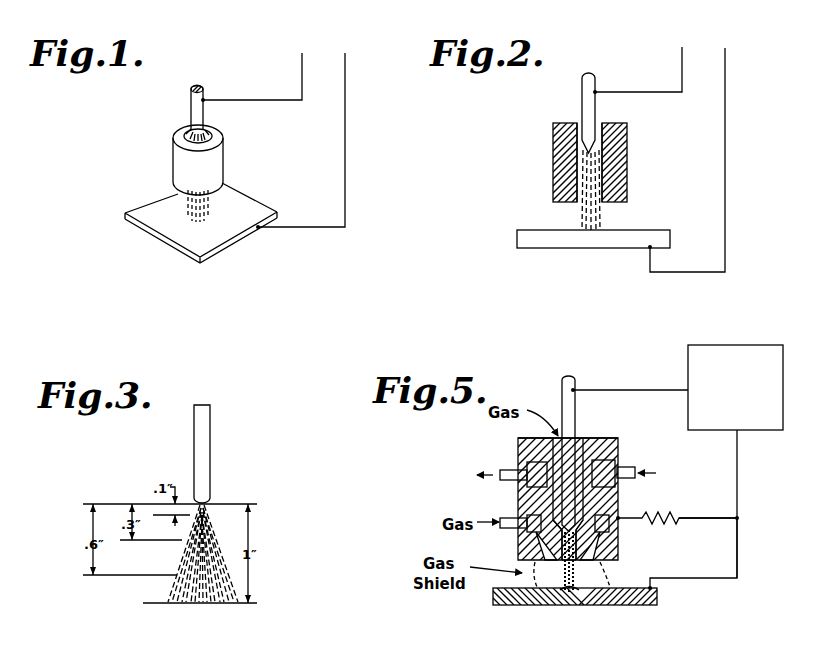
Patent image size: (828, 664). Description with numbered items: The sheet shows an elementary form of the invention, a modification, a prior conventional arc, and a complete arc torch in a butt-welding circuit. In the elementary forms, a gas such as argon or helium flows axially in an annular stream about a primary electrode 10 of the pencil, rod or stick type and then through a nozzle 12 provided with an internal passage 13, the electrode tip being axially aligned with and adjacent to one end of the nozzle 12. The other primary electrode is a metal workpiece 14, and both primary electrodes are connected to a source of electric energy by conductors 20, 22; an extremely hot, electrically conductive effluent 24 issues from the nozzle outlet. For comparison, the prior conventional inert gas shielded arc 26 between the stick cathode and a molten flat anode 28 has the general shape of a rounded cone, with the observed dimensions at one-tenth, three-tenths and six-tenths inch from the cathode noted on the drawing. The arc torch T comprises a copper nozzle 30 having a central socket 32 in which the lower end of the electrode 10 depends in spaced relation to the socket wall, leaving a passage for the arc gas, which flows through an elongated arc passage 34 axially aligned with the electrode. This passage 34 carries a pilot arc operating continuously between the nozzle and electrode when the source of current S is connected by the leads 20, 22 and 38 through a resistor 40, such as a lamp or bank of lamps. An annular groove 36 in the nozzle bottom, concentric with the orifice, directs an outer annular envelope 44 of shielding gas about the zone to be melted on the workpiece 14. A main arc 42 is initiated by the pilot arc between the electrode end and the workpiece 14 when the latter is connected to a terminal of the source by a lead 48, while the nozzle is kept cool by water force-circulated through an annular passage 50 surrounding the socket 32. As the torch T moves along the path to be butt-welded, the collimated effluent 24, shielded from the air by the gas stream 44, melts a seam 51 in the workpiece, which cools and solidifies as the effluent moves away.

In FIG. 1, the primary electrode 10 is at (191, 100).
In FIG. 2, the primary electrode 10 is at (582, 81).
In FIG. 3, the primary electrode 10 is at (202, 432).
In FIG. 5, the primary electrode 10 is at (565, 382).
In FIG. 1, the nozzle 12 is at (183, 157).
In FIG. 2, the nozzle 12 is at (553, 155).
In FIG. 1, the internal passage 13 is at (217, 128).
In FIG. 2, the internal passage 13 is at (598, 137).
In FIG. 1, the workpiece 14 is at (235, 200).
In FIG. 2, the workpiece 14 is at (657, 235).
In FIG. 5, the workpiece 14 is at (660, 600).
In FIG. 1, the conductor 20 is at (302, 72).
In FIG. 2, the conductor 20 is at (682, 62).
In FIG. 5, the conductor 20 is at (623, 390).
In FIG. 1, the conductor 22 is at (345, 72).
In FIG. 2, the conductor 22 is at (725, 62).
In FIG. 5, the conductor 22 is at (738, 460).
In FIG. 1, the effluent 24 is at (192, 212).
In FIG. 2, the effluent 24 is at (583, 213).
In FIG. 5, the effluent 24 is at (575, 570).
In FIG. 3, the inert gas shielded arc 26 is at (185, 590).
In FIG. 3, the molten flat anode 28 is at (155, 605).
In FIG. 5, the copper nozzle 30 is at (518, 500).
In FIG. 5, the central socket 32 is at (618, 443).
In FIG. 5, the arc passage 34 is at (560, 548).
In FIG. 5, the annular groove 36 is at (595, 553).
In FIG. 5, the lead 38 is at (712, 520).
In FIG. 5, the resistor 40 is at (660, 515).
In FIG. 5, the main arc 42 is at (578, 545).
In FIG. 5, the shielding gas stream 44 is at (537, 603).
In FIG. 5, the lead 48 is at (738, 548).
In FIG. 5, the annular passage 50 is at (600, 477).
In FIG. 5, the seam 51 is at (575, 604).
In FIG. 5, the source of current S is at (731, 345).
In FIG. 5, the arc torch T is at (515, 447).